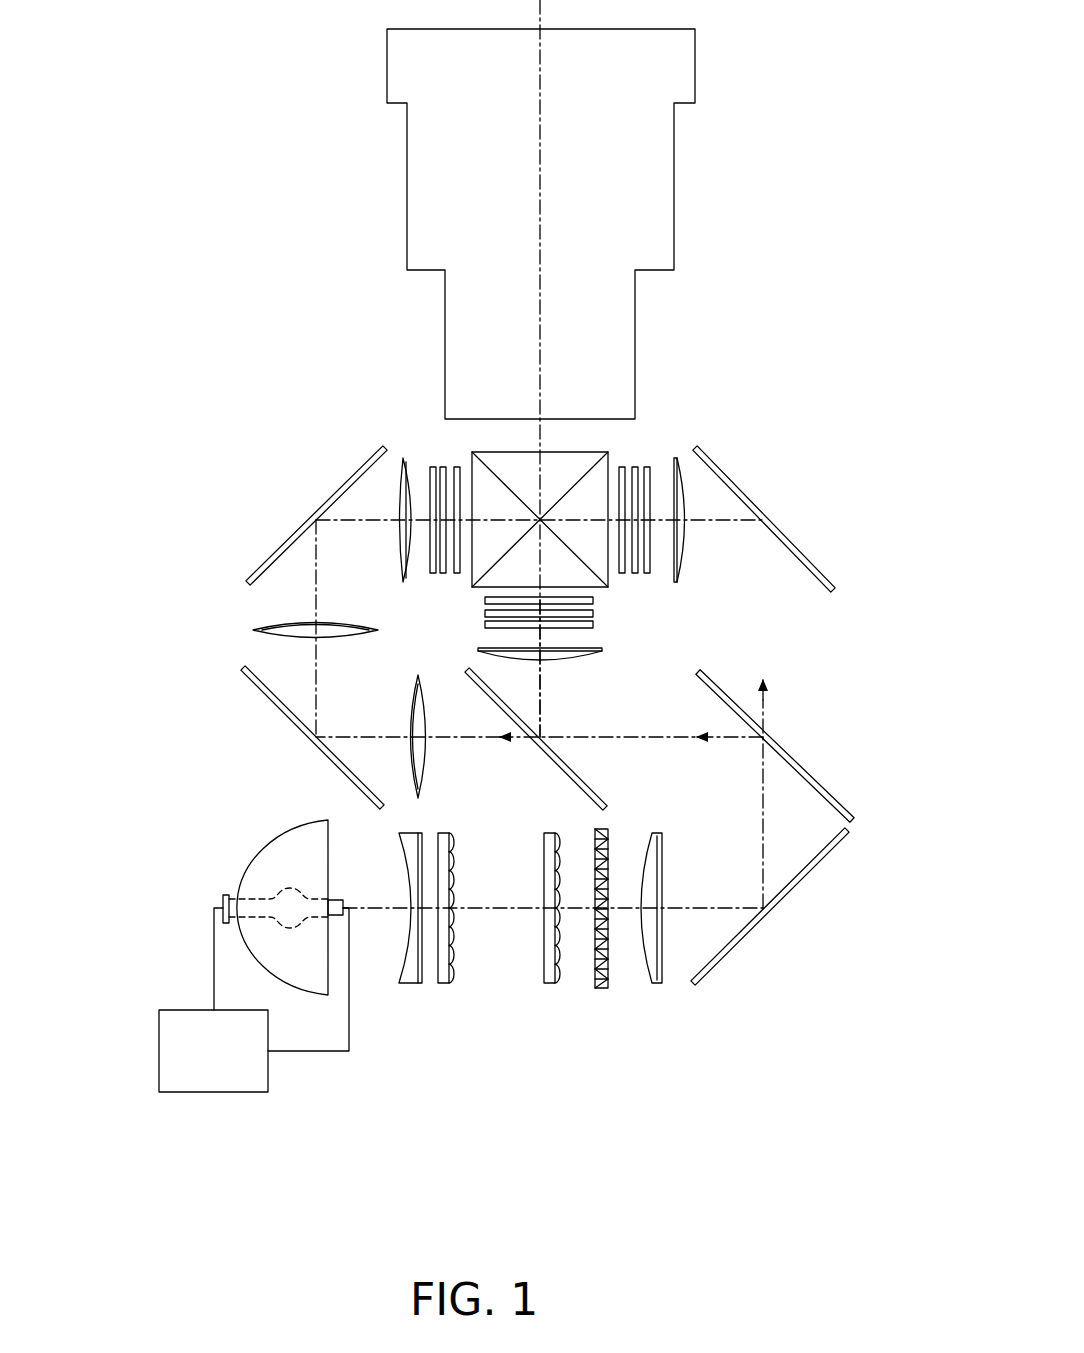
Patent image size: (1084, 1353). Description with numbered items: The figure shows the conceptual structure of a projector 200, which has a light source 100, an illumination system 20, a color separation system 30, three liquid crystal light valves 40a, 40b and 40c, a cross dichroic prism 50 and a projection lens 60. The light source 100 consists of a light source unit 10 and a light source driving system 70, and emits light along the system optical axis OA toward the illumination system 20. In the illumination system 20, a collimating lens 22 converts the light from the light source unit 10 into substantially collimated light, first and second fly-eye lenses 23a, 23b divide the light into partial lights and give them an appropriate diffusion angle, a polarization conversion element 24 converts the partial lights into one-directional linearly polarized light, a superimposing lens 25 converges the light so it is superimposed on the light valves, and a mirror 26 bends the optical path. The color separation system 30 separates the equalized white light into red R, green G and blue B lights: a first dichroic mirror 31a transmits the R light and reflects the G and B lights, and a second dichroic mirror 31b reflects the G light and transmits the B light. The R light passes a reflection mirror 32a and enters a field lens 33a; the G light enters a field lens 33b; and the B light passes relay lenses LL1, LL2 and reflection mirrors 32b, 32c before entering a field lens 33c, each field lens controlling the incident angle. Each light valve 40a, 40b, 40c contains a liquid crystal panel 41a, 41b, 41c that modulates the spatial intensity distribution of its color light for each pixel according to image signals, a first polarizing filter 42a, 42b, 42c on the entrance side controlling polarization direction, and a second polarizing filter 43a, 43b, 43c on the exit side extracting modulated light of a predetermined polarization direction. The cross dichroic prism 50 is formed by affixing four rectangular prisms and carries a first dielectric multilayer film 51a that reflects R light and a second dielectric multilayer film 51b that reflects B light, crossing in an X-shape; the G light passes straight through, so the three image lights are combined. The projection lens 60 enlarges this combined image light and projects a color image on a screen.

The projector 200 is at (855, 33).
The light source 100 is at (467, 1007).
The light source unit 10 is at (229, 880).
The light source driving system 70 is at (165, 1048).
The illumination system 20 is at (528, 994).
The collimating lens 22 is at (412, 982).
The first fly-eye lens 23a is at (445, 985).
The second fly-eye lens 23b is at (548, 985).
The polarization conversion element 24 is at (602, 990).
The superimposing lens 25 is at (656, 985).
The mirror 26 is at (733, 948).
The system optical axis OA is at (480, 910).
The color separation system 30 is at (511, 677).
The first dichroic mirror 31a is at (808, 775).
The second dichroic mirror 31b is at (585, 783).
The reflection mirror 32a is at (820, 566).
The reflection mirror 32b is at (283, 715).
The reflection mirror 32c is at (268, 560).
The relay lens LL1 is at (430, 770).
The relay lens LL2 is at (253, 630).
The R light R is at (763, 617).
The G light G is at (540, 725).
The B light B is at (316, 605).
The field lens 33a is at (684, 500).
The field lens 33b is at (600, 662).
The field lens 33c is at (400, 540).
The liquid crystal light valve 40a is at (737, 493).
The liquid crystal light valve 40b is at (577, 656).
The liquid crystal light valve 40c is at (348, 548).
The liquid crystal panel 41a is at (636, 550).
The liquid crystal panel 41b is at (596, 623).
The liquid crystal panel 41c is at (440, 495).
The first polarizing filter 42a is at (648, 575).
The first polarizing filter 42b is at (491, 618).
The first polarizing filter 42c is at (433, 575).
The second polarizing filter 43a is at (623, 575).
The second polarizing filter 43b is at (487, 600).
The second polarizing filter 43c is at (458, 575).
The cross dichroic prism 50 is at (524, 447).
The first dielectric multilayer film 51a is at (490, 455).
The second dielectric multilayer film 51b is at (590, 454).
The projection lens 60 is at (638, 222).